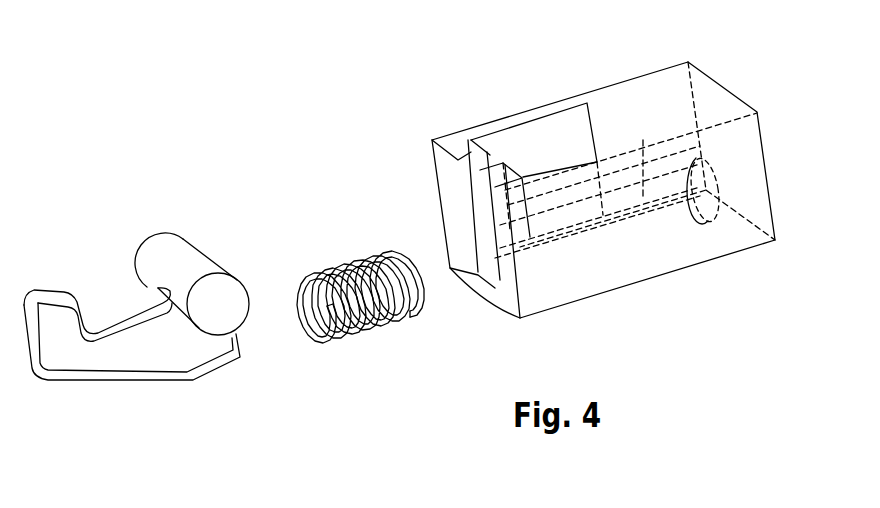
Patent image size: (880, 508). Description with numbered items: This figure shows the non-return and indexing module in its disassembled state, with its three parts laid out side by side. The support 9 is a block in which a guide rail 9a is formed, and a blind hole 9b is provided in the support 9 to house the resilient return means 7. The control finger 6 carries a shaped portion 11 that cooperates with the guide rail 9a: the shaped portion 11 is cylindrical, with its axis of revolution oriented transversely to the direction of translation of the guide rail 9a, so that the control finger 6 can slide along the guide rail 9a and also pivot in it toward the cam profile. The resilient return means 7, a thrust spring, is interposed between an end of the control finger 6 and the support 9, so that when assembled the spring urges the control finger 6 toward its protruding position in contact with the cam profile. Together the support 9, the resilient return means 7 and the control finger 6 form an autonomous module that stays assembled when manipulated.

The control finger 6 is at (100, 268).
The shaped portion 11 is at (195, 260).
The resilient return means 7 is at (348, 248).
The support 9 is at (603, 162).
The guide rail 9a is at (542, 148).
The blind hole 9b is at (707, 203).